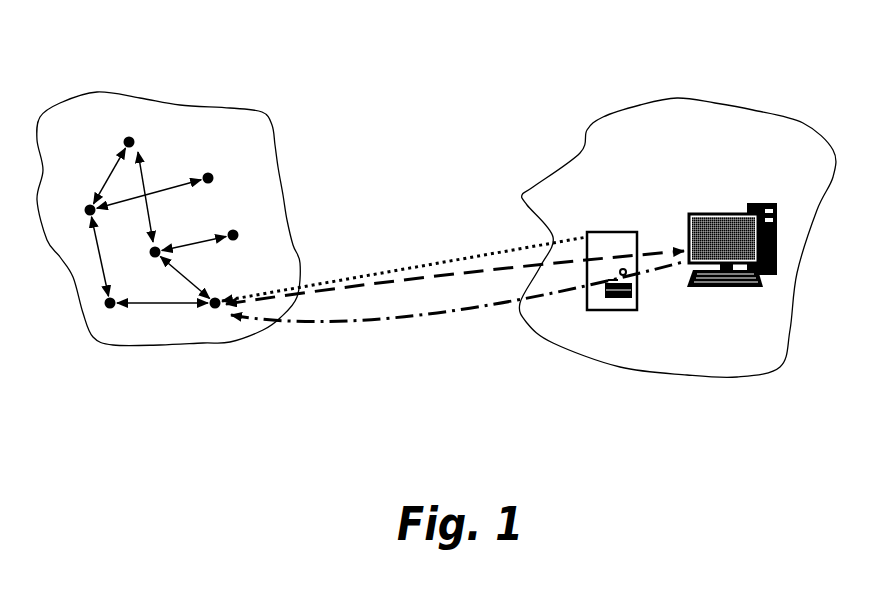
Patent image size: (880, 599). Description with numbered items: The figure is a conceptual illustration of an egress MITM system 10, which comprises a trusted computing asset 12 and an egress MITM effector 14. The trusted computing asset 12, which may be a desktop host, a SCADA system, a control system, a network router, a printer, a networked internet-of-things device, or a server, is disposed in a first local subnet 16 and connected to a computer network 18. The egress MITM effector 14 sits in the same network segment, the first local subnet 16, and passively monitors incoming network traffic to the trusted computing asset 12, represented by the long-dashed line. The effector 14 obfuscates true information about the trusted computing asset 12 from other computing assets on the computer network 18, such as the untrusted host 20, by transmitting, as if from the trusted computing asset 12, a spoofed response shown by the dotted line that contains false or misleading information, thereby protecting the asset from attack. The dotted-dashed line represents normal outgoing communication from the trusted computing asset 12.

The egress MITM system 10 is at (520, 115).
The trusted computing asset 12 is at (727, 287).
The egress MITM effector 14 is at (600, 232).
The first local subnet 16 is at (752, 110).
The computer network 18 is at (230, 108).
The untrusted host 20 is at (215, 307).